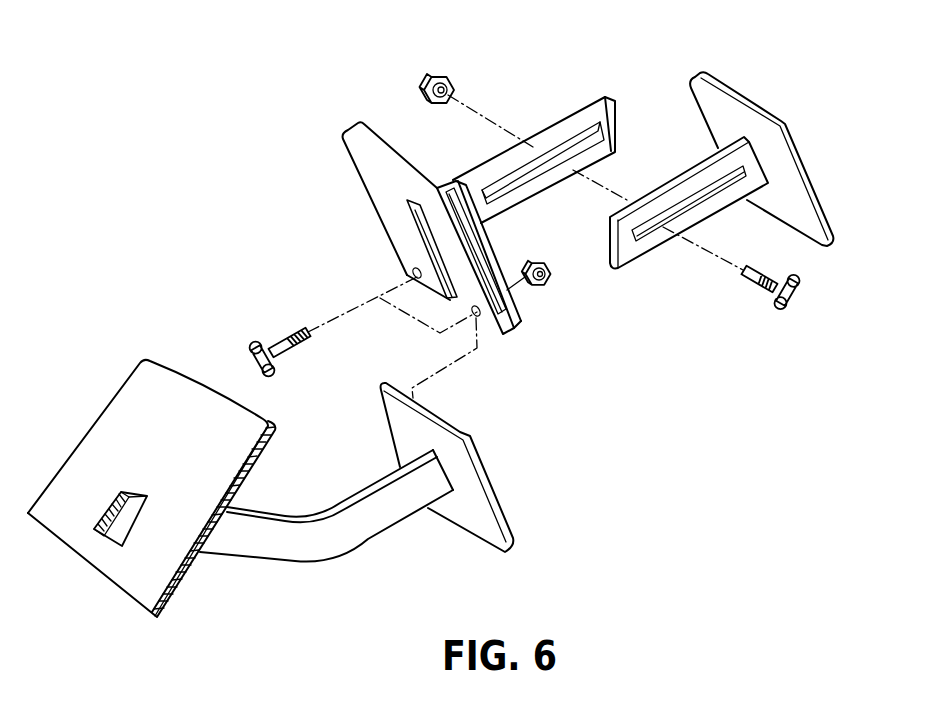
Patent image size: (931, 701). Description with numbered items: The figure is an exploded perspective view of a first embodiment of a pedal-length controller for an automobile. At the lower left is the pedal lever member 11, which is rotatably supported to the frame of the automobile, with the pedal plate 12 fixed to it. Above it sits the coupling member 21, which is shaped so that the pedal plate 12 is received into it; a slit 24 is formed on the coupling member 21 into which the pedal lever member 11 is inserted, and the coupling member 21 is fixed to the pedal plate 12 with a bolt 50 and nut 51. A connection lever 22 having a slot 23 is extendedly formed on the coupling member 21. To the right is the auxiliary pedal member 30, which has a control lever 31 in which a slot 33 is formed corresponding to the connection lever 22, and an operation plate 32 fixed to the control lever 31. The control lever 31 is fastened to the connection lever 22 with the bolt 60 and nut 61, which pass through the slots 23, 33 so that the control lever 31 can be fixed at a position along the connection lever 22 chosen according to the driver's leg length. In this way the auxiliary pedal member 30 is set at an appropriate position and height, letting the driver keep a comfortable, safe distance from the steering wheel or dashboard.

The pedal lever member 11 is at (272, 557).
The pedal plate 12 is at (478, 533).
The coupling member 21 is at (342, 122).
The connection lever 22 is at (567, 146).
The slot 23 is at (598, 142).
The slit 24 is at (413, 213).
The auxiliary pedal member 30 is at (748, 188).
The control lever 31 is at (687, 235).
The operation plate 32 is at (830, 207).
The slot 33 is at (655, 220).
The bolt 50 is at (277, 345).
The nut 51 is at (550, 285).
The bolt 60 is at (757, 288).
The nut 61 is at (430, 77).